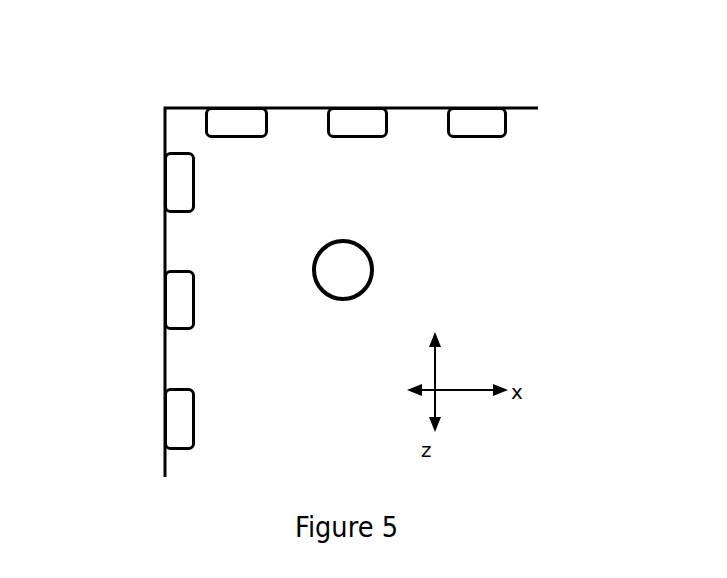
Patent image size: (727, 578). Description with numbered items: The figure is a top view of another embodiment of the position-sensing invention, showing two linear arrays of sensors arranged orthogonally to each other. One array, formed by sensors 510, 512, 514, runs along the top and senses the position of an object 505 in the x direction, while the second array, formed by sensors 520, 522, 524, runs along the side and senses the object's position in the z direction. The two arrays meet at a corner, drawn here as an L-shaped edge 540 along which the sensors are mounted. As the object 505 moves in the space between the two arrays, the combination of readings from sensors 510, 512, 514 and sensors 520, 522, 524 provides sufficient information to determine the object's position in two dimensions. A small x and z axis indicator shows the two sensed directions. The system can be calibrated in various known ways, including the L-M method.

The object 505 is at (454, 262).
The sensor 510 is at (310, 95).
The sensor 512 is at (431, 95).
The sensor 514 is at (551, 95).
The sensor 520 is at (115, 155).
The sensor 522 is at (115, 273).
The sensor 524 is at (115, 392).
The frame / reference edge 540 is at (293, 267).